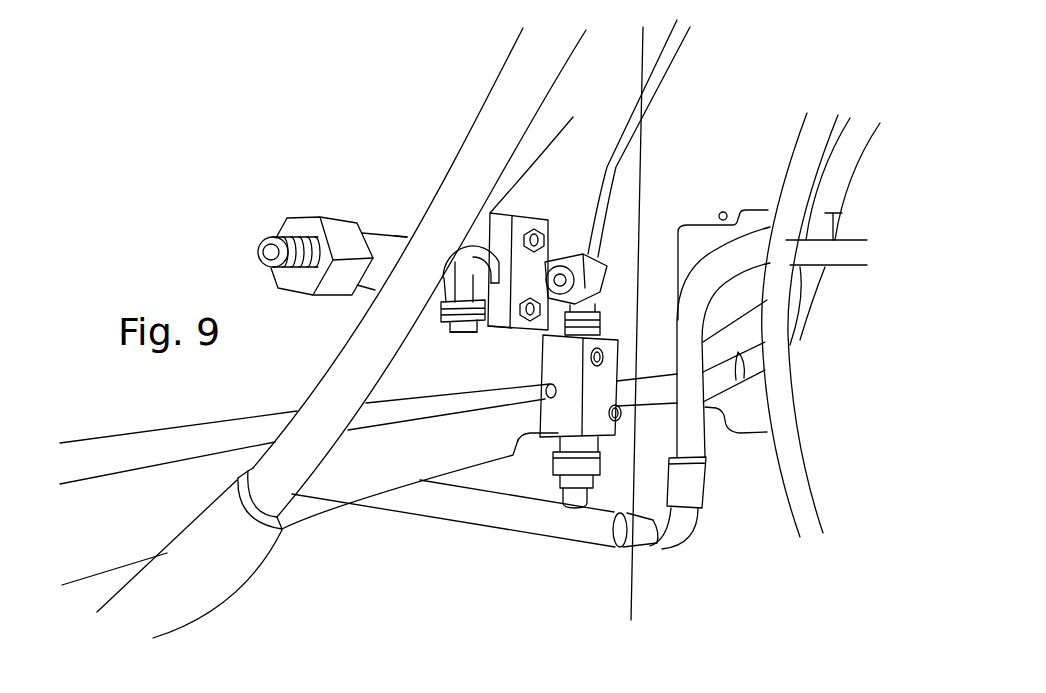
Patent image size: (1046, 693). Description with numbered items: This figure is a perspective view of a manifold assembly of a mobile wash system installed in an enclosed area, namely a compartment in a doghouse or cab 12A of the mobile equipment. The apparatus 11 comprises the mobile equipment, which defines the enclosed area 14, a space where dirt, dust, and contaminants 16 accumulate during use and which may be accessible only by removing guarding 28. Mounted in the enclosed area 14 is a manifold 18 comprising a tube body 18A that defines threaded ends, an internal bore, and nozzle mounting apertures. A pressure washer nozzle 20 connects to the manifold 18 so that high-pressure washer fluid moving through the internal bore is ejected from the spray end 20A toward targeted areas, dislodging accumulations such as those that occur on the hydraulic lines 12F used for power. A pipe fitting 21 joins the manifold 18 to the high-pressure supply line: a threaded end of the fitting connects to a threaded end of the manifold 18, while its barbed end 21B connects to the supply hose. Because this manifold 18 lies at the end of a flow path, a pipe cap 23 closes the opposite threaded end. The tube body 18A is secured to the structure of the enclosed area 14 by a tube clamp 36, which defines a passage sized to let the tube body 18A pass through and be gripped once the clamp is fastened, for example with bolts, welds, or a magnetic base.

The apparatus 11 is at (145, 117).
The doghouse or cab 12A is at (324, 106).
The hydraulic lines 12F is at (117, 452).
The enclosed area 14 is at (378, 97).
The dirt, dust, and contaminants 16 is at (456, 449).
The manifold 18 is at (380, 236).
The tube body 18A is at (407, 237).
The pressure washer nozzles 20 is at (562, 254).
The spray end 20A is at (462, 338).
The pipe fitting 21 is at (292, 226).
The barbed end 21B is at (258, 240).
The pipe cap 23 is at (606, 278).
The guarding 28 is at (634, 131).
The tube clamp 36 is at (545, 158).